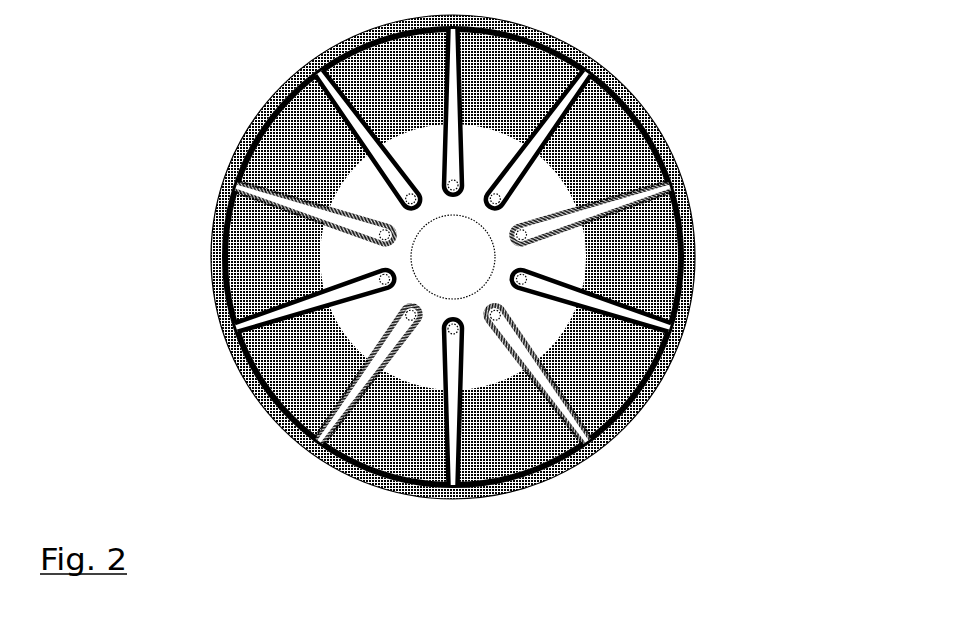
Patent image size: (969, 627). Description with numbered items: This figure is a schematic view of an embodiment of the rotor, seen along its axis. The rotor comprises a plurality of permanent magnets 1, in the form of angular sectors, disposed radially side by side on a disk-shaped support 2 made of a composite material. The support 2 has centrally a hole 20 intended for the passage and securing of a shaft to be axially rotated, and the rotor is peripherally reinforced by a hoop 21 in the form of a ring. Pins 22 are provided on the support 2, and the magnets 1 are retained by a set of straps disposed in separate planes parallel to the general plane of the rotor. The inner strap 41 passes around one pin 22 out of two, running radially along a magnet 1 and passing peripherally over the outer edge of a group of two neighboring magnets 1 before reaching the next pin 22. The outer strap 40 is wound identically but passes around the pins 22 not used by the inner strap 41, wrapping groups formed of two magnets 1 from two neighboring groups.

The permanent magnet 1 is at (427, 249).
The disk-shaped support 2 is at (367, 313).
The hole 20 is at (443, 246).
The hoop 21 is at (222, 200).
The pin 22 is at (387, 233).
The outer strap 40 is at (545, 367).
The inner strap 41 is at (603, 283).